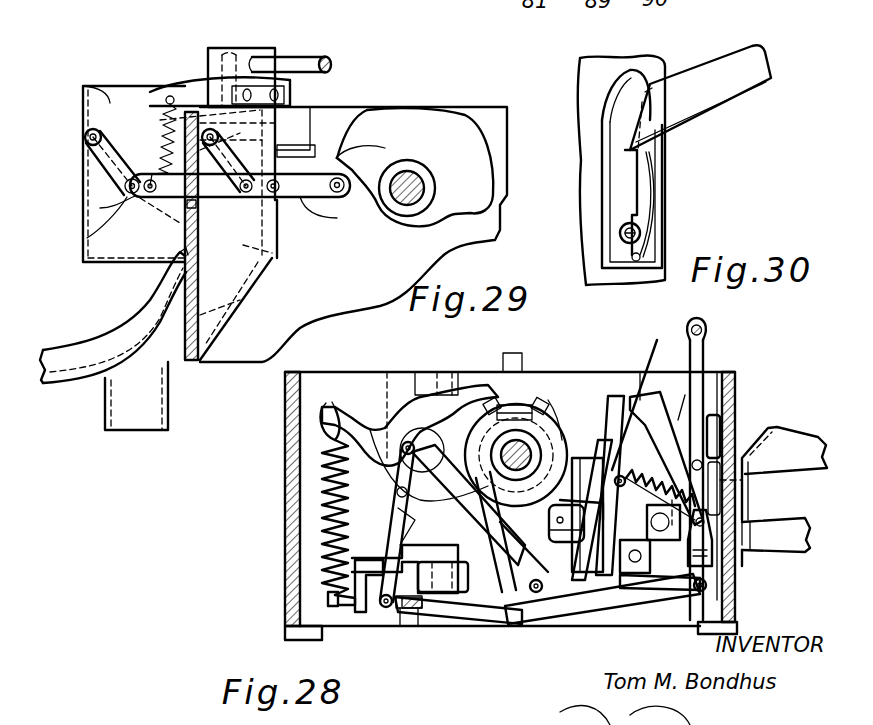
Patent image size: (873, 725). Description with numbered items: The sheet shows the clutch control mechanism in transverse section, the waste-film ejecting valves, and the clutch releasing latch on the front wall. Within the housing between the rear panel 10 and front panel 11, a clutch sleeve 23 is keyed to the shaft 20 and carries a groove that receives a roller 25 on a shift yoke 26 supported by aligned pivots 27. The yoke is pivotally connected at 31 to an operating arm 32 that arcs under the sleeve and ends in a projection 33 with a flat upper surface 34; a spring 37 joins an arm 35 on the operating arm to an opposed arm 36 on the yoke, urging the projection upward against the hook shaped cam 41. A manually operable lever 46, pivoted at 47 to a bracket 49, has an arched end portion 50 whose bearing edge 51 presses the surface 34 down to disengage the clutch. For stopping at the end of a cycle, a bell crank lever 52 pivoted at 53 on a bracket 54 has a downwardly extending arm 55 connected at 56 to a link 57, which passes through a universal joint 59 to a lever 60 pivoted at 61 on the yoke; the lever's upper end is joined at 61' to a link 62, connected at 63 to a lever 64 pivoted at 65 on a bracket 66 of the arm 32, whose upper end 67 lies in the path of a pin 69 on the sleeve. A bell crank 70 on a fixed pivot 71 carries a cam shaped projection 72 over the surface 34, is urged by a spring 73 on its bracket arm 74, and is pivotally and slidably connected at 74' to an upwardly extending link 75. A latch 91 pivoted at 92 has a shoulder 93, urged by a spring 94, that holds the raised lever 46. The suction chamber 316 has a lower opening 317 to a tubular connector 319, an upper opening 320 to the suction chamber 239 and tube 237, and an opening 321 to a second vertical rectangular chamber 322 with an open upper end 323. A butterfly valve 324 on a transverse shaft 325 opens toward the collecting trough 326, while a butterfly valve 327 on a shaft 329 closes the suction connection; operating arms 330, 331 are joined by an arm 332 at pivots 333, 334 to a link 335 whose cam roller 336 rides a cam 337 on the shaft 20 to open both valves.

In FIG. 28, the rear panel 10 is at (288, 587).
In FIG. 30, the front panel 11 is at (597, 101).
In FIG. 28, the front panel 11 is at (737, 608).
In FIG. 29, the shaft 20 is at (405, 200).
In FIG. 28, the shaft 20 is at (505, 467).
In FIG. 28, the clutch sleeve 23 is at (547, 428).
In FIG. 28, the roller 25 is at (520, 405).
In FIG. 28, the shift yoke 26 is at (483, 372).
In FIG. 28, the pivots 27 is at (428, 385).
In FIG. 28, the pivot 31 is at (398, 478).
In FIG. 28, the operating arm 32 is at (516, 567).
In FIG. 28, the projection 33 is at (603, 537).
In FIG. 28, the flat upper surface 34 is at (605, 420).
In FIG. 28, the arm 35 is at (340, 410).
In FIG. 28, the arm 36 is at (366, 605).
In FIG. 28, the spring 37 is at (340, 540).
In FIG. 28, the hook shaped cam 41 is at (640, 372).
In FIG. 30, the manually operable lever 46 is at (713, 78).
In FIG. 28, the manually operable lever 46 is at (800, 446).
In FIG. 28, the pivot 47 is at (740, 420).
In FIG. 28, the bracket 49 is at (736, 382).
In FIG. 28, the arched end portion 50 is at (688, 395).
In FIG. 28, the bearing edge 51 is at (596, 455).
In FIG. 28, the bell crank lever 52 is at (790, 522).
In FIG. 28, the pivot 53 is at (745, 558).
In FIG. 28, the bracket 54 is at (745, 500).
In FIG. 28, the downwardly extending arm 55 is at (687, 588).
In FIG. 28, the pivot 56 is at (693, 600).
In FIG. 28, the link 57 is at (582, 600).
In FIG. 28, the universal joint 59 is at (407, 612).
In FIG. 28, the lever 60 is at (398, 508).
In FIG. 28, the pivot 61 is at (385, 417).
In FIG. 28, the pivot 61' is at (492, 423).
In FIG. 28, the link 62 is at (505, 600).
In FIG. 28, the pivot 63 is at (536, 592).
In FIG. 28, the lever 64 is at (548, 568).
In FIG. 28, the pivot 65 is at (560, 520).
In FIG. 28, the bracket 66 is at (566, 538).
In FIG. 28, the upper end 67 is at (612, 470).
In FIG. 28, the pin 69 is at (548, 400).
In FIG. 28, the bell crank 70 is at (650, 598).
In FIG. 28, the fixed pivot 71 is at (632, 565).
In FIG. 28, the cam shaped projection 72 is at (652, 396).
In FIG. 28, the spring 73 is at (642, 490).
In FIG. 28, the bracket arm 74 is at (664, 533).
In FIG. 28, the pivotal and slidable connection 74' is at (743, 551).
In FIG. 28, the link 75 is at (712, 392).
In FIG. 30, the latch 91 is at (623, 165).
In FIG. 30, the pivot 92 is at (645, 236).
In FIG. 30, the shoulder 93 is at (663, 157).
In FIG. 30, the spring 94 is at (655, 195).
In FIG. 29, the tubular connection 237 is at (308, 57).
In FIG. 29, the suction chamber 239 is at (228, 48).
In FIG. 29, the suction chamber 316 is at (276, 252).
In FIG. 29, the opening 317 is at (236, 310).
In FIG. 29, the tubular connector 319 is at (150, 402).
In FIG. 29, the opening 320 is at (298, 104).
In FIG. 29, the opening 321 is at (202, 222).
In FIG. 29, the second vertical rectangular chamber 322 is at (105, 207).
In FIG. 29, the open upper end 323 is at (83, 103).
In FIG. 29, the butterfly valve 324 is at (178, 223).
In FIG. 29, the transverse shaft 325 is at (85, 139).
In FIG. 29, the collecting trough 326 is at (83, 355).
In FIG. 29, the butterfly valve 327 is at (365, 143).
In FIG. 29, the shaft 329 is at (262, 126).
In FIG. 29, the operating arm 330 is at (110, 168).
In FIG. 29, the operating arm 331 is at (275, 152).
In FIG. 29, the arm 332 is at (160, 162).
In FIG. 29, the pivot 333 is at (90, 238).
In FIG. 29, the pivot 334 is at (270, 226).
In FIG. 29, the link 335 is at (302, 197).
In FIG. 29, the cam roller 336 is at (411, 177).
In FIG. 29, the cam 337 is at (440, 128).